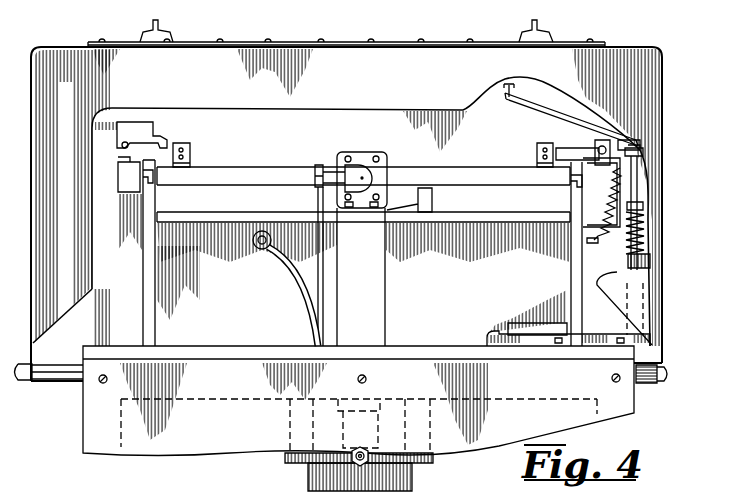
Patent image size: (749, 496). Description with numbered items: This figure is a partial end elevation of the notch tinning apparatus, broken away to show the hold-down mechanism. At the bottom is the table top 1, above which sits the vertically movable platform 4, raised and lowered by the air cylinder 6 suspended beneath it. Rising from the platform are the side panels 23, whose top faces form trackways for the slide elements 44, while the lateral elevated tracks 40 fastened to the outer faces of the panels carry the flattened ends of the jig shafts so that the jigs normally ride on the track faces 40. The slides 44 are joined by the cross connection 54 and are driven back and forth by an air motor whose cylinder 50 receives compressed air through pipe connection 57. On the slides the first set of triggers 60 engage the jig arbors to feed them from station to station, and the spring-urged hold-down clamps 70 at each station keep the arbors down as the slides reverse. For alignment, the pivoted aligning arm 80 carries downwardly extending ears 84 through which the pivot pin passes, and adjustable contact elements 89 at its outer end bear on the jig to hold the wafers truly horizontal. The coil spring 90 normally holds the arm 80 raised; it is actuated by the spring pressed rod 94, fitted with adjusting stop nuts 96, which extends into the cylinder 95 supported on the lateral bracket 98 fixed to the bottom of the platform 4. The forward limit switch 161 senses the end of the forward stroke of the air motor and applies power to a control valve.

The table top 1 is at (403, 346).
The vertically movable platform 4 is at (546, 328).
The cylinder 6 is at (314, 476).
The side panels 23 is at (143, 313).
The lateral elevated tracks 40 is at (127, 162).
The slide elements 44 is at (160, 180).
The cylinder 50 is at (364, 160).
The cross connection 54 is at (258, 173).
The pipe connection 57 is at (332, 185).
The first set of triggers 60 is at (202, 153).
The spring-urged hold-down clamps 70 is at (171, 139).
The pivoted aligning arm 80 is at (550, 97).
The downwardly extending ears 84 is at (621, 140).
The adjustable contact elements 89 is at (507, 103).
The coil spring 90 is at (614, 190).
The spring pressed rod 94 is at (644, 203).
The cylinder 95 is at (656, 258).
The adjusting stop nuts 96 is at (645, 233).
The lateral bracket 98 is at (614, 336).
The forward limit switch 161 is at (432, 205).